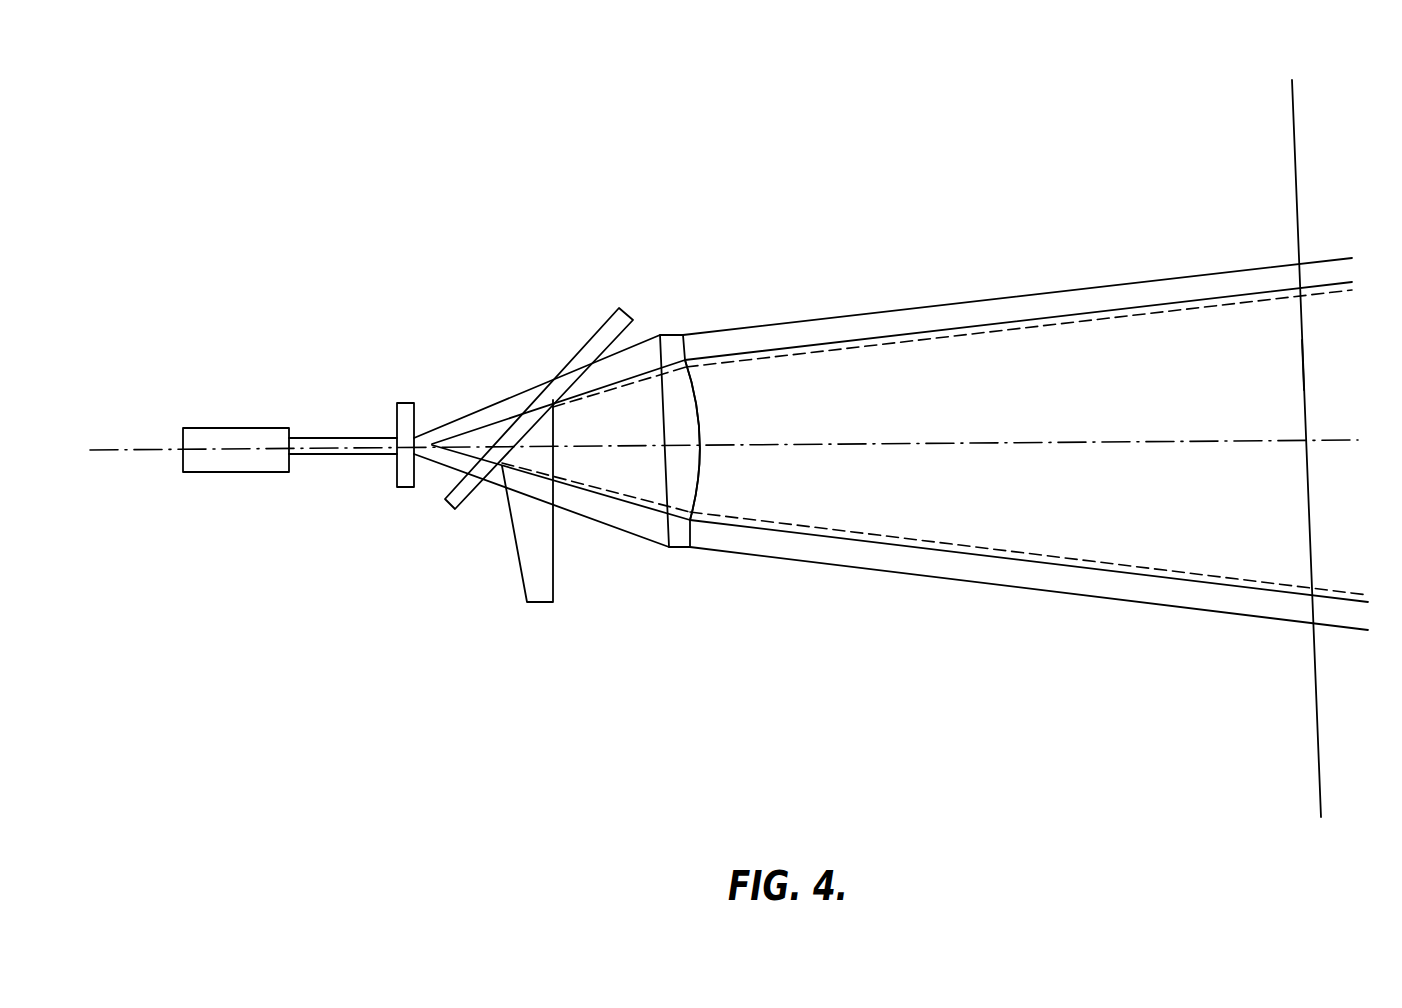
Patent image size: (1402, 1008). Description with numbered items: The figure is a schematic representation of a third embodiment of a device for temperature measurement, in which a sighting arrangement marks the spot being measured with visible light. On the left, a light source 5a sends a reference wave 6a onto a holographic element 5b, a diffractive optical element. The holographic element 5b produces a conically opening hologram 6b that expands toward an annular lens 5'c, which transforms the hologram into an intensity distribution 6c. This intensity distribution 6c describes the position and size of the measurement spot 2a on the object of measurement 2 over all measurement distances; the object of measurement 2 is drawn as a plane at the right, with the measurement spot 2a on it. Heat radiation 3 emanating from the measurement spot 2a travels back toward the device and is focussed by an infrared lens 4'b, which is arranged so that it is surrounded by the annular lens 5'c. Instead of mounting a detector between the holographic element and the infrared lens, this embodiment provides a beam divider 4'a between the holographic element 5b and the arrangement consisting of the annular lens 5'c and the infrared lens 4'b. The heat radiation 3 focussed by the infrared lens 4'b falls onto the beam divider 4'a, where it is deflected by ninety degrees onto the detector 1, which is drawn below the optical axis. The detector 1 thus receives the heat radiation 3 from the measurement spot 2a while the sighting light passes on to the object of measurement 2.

The detector 1 is at (535, 605).
The object of measurement 2 is at (1310, 740).
The measurement spot 2a is at (1298, 358).
The heat radiation 3 is at (1036, 326).
The beam divider 4'a is at (552, 380).
The infrared lens 4'b is at (735, 440).
The light source 5a is at (229, 440).
The holographic element 5b is at (403, 410).
The annular lens 5'c is at (700, 399).
The reference wave 6a is at (355, 447).
The conically opening hologram 6b is at (612, 515).
The intensity distribution 6c is at (912, 320).